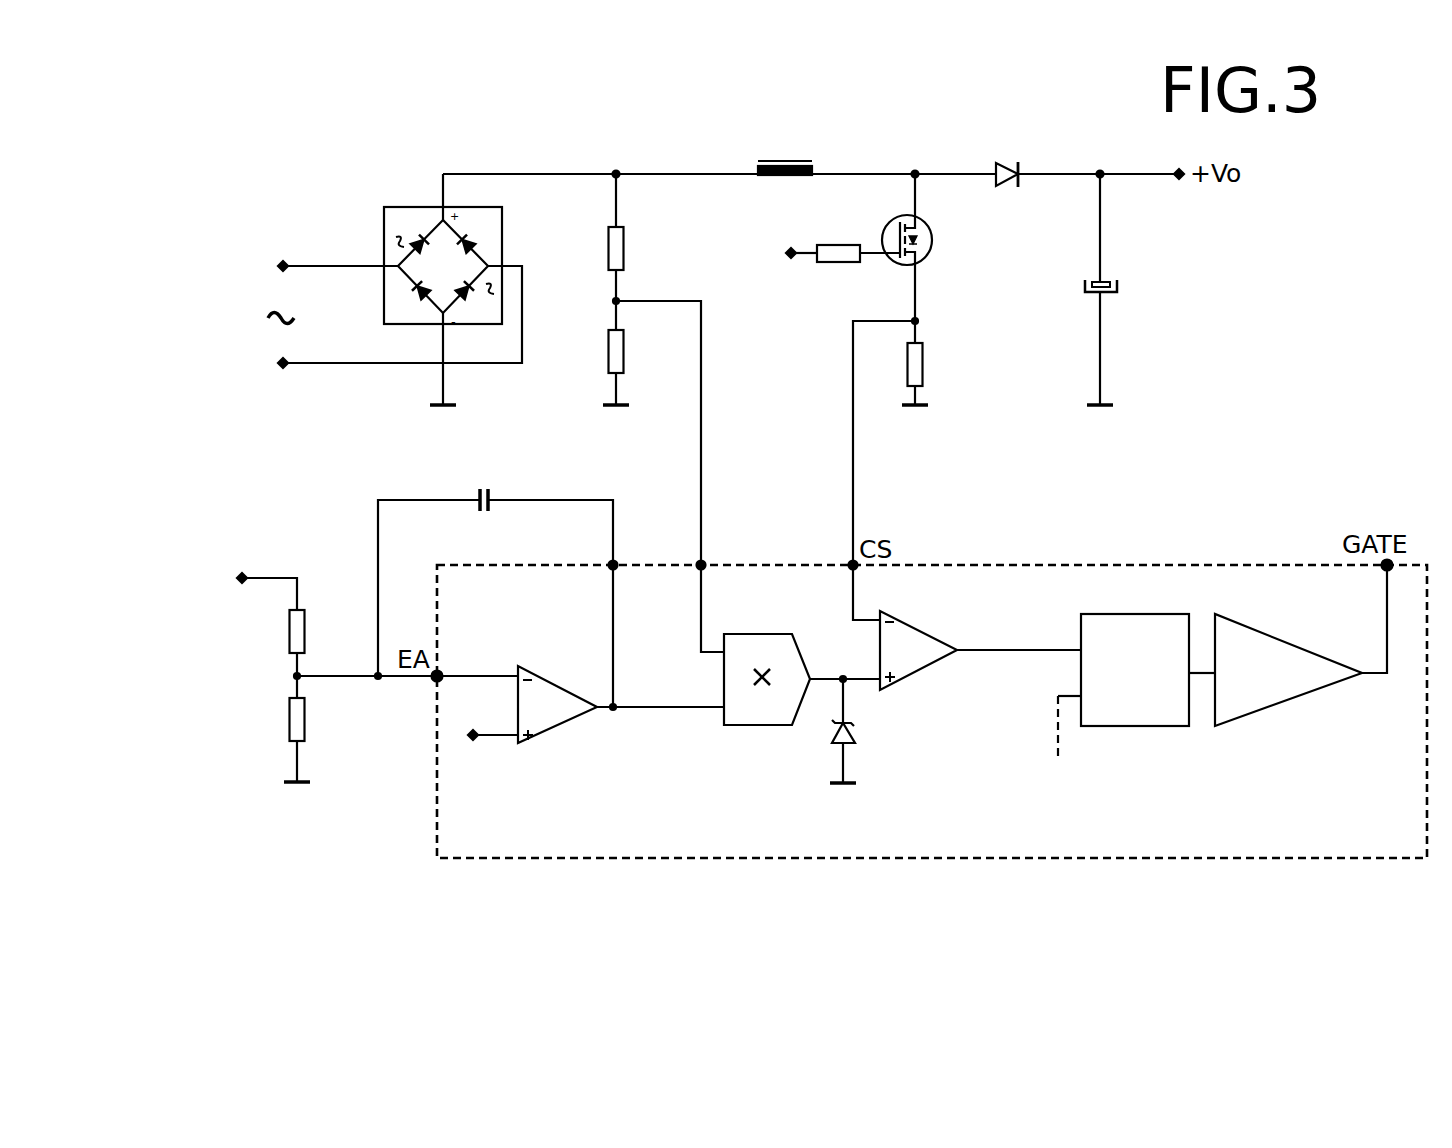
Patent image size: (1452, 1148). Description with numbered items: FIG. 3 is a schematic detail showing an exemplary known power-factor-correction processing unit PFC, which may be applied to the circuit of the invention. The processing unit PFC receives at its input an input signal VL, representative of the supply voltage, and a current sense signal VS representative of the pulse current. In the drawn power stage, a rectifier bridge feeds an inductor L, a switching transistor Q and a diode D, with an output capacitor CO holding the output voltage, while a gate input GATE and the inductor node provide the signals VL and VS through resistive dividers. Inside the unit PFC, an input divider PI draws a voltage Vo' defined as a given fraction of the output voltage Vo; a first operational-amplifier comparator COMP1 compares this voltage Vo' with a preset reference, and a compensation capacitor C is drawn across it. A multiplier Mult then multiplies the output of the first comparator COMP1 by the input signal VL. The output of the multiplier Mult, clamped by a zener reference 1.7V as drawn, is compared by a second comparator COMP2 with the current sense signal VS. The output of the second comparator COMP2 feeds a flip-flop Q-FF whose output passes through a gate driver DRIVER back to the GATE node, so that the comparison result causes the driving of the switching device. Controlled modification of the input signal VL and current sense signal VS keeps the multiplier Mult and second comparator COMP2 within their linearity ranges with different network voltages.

The boost inductor L is at (785, 151).
The boost diode D is at (1009, 157).
The switching transistor (MOSFET) Q is at (921, 258).
The output capacitor CO is at (1124, 289).
The input signal VL is at (651, 413).
The current sense signal VS is at (903, 463).
The gate drive input GATE is at (802, 253).
The compensation capacitor C is at (496, 582).
The input divider PI is at (265, 687).
The first comparator COMP1 is at (584, 717).
The multiplier Mult is at (802, 692).
The zener reference 1.7V is at (875, 731).
The second comparator COMP2 is at (972, 638).
The RS flip-flop Q-FF is at (1136, 687).
The gate driver DRIVER is at (1304, 643).
The processing unit PFC is at (412, 821).